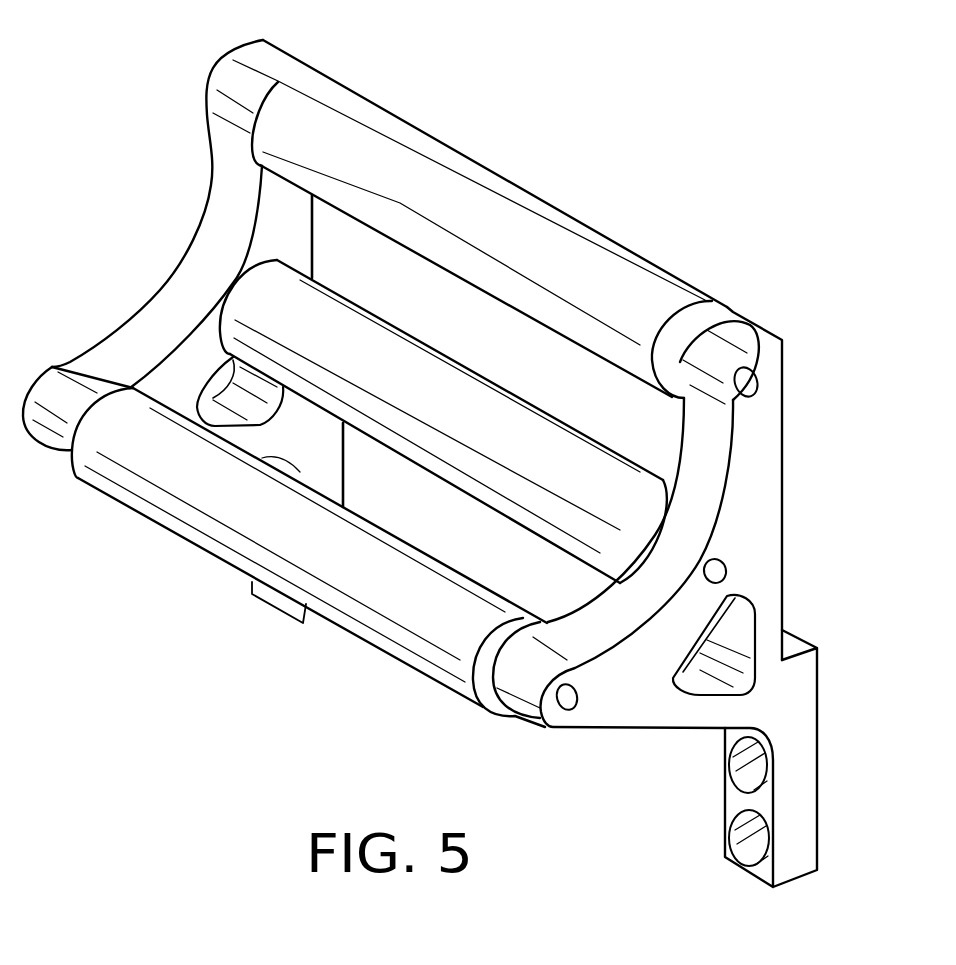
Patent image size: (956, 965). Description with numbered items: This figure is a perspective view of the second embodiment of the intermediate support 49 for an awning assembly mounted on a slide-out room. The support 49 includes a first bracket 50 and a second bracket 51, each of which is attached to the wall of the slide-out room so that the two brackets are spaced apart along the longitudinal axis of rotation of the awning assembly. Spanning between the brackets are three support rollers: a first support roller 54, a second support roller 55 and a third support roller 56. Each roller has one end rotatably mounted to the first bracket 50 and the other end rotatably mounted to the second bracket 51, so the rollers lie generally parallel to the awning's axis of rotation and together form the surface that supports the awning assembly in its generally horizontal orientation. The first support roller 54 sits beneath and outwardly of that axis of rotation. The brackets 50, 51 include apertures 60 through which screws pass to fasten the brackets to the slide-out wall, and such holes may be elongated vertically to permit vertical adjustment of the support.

The intermediate support 49 is at (464, 463).
The first bracket 50 is at (689, 597).
The second bracket 51 is at (150, 307).
The first support roller 54 is at (222, 552).
The second support roller 55 is at (387, 127).
The third support roller 56 is at (503, 482).
The apertures 60 is at (743, 773).